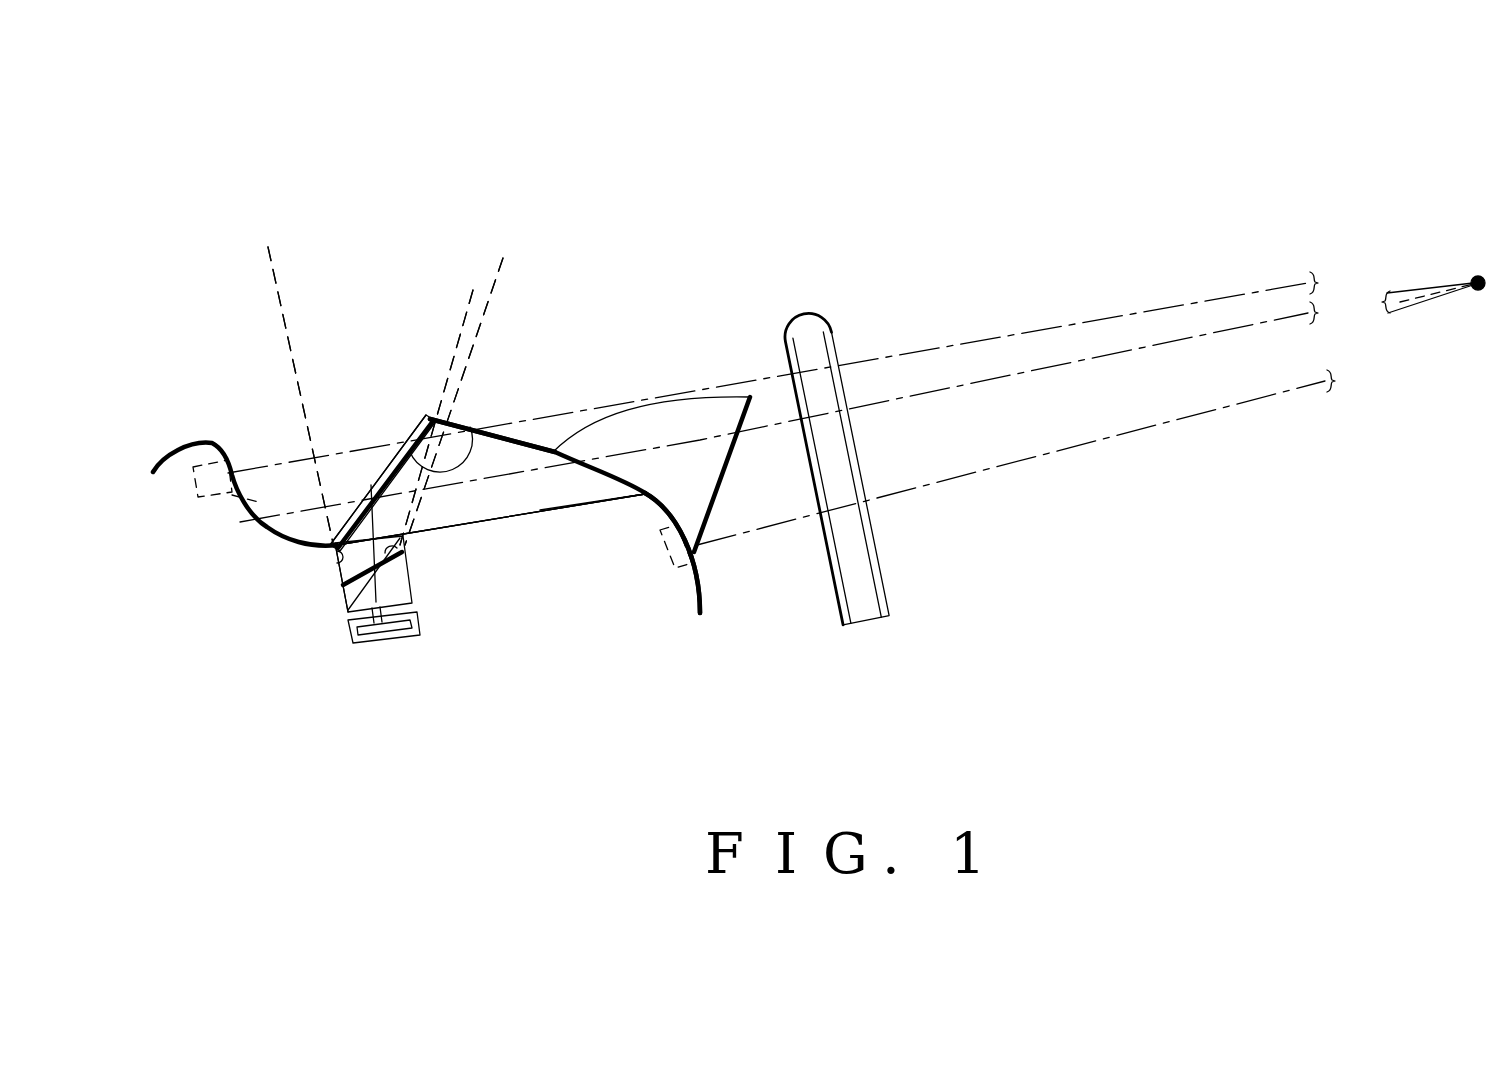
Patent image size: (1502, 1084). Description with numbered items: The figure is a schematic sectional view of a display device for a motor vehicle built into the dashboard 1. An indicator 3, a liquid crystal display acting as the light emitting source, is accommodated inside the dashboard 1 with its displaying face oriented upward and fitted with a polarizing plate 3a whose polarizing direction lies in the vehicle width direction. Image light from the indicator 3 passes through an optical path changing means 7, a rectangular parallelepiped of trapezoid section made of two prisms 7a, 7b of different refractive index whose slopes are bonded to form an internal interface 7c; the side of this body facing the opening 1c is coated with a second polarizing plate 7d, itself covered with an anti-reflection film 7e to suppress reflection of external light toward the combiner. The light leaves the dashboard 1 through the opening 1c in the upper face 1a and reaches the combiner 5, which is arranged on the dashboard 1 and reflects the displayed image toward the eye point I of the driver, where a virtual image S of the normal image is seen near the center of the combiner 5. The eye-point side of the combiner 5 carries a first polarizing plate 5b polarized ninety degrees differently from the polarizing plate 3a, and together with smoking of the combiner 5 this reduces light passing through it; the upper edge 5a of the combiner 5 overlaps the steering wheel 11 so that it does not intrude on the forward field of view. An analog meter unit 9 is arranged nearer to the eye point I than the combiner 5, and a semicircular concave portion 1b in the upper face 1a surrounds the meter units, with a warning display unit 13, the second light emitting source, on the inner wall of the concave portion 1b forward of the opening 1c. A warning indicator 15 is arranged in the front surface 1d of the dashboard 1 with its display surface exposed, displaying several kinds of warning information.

The dashboard 1 is at (683, 590).
The upper face 1a is at (593, 500).
The semicircular concave portion 1b is at (495, 515).
The opening 1c is at (338, 570).
The front surface 1d is at (703, 605).
The indicator 3 is at (418, 648).
The polarizing plate 3a is at (390, 642).
The combiner 5 is at (388, 452).
The upper edge 5a is at (430, 418).
The polarizing plate 5b is at (433, 435).
The optical path changing means 7 is at (417, 570).
The prism 7a is at (348, 595).
The prism 7b is at (400, 588).
The internal interface 7c is at (367, 645).
The polarizing plate 7d is at (405, 542).
The anti-reflection film 7e is at (405, 542).
The analog meter unit 9 is at (694, 408).
The steering wheel 11 is at (800, 335).
The warning display unit 13 is at (254, 428).
The indicator for warning 15 is at (680, 525).
The virtual image S is at (268, 528).
The eye point I is at (1477, 278).